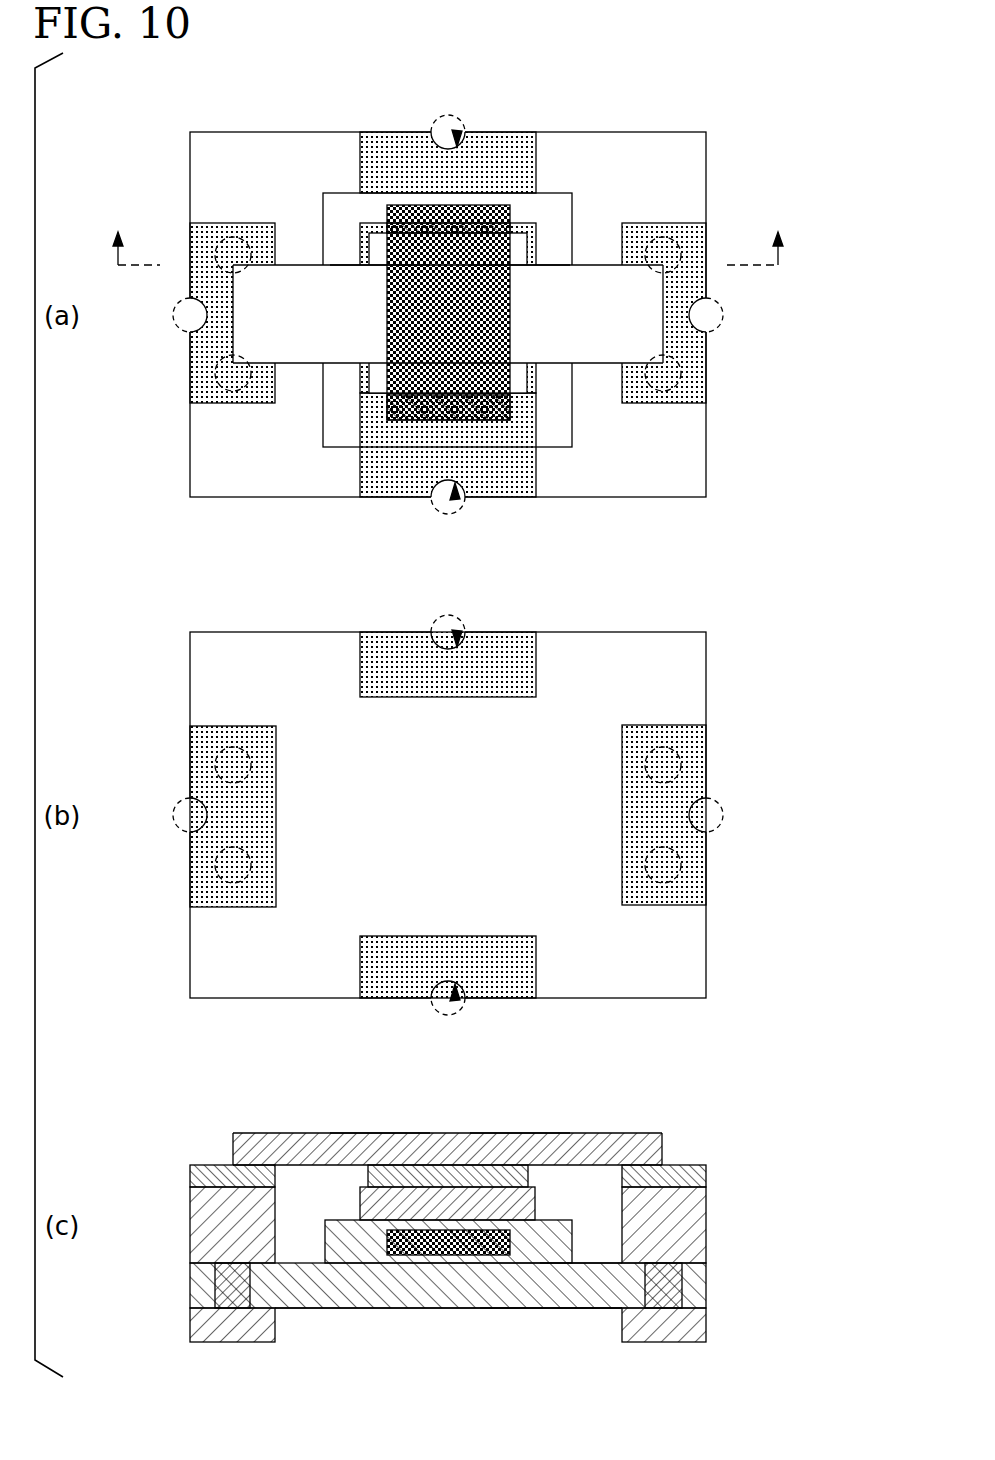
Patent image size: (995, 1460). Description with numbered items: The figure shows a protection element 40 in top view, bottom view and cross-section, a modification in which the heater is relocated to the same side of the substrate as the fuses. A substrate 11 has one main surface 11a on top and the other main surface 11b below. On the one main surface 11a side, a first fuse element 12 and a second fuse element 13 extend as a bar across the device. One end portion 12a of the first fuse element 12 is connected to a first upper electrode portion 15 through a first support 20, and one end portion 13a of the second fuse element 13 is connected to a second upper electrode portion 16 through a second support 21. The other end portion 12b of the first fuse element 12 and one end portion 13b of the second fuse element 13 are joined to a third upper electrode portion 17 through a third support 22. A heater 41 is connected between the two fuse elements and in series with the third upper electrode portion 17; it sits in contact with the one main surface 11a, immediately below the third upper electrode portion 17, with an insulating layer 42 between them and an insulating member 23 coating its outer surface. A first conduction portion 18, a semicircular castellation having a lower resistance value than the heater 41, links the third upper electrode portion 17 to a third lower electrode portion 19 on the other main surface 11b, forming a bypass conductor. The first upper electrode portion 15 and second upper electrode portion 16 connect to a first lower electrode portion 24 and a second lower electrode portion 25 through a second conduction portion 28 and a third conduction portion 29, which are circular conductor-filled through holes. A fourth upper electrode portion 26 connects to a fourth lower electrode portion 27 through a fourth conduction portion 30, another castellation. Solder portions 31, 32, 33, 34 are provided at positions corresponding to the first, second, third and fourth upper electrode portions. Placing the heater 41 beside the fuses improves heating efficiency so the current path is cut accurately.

The substrate 11 is at (668, 155).
The one main surface 11a is at (590, 1262).
The other main surface 11b is at (540, 1308).
The first fuse element 12 is at (290, 300).
The one end portion of first fuse element 12a is at (248, 318).
The other end portion of first fuse element 12b is at (375, 306).
The second fuse element 13 is at (608, 300).
The one end portion of second fuse element 13a is at (650, 318).
The one end portion of second fuse element 13b is at (522, 307).
The first upper electrode portion 15 is at (212, 1228).
The second upper electrode portion 16 is at (683, 1233).
The third upper electrode portion 17 is at (515, 482).
The first conduction portion 18 is at (458, 495).
The third lower electrode portion 19 is at (400, 660).
The first support 20 is at (233, 235).
The second support 21 is at (663, 240).
The third support 22 is at (382, 385).
The insulating member 23 is at (348, 1305).
The first lower electrode portion 24 is at (248, 825).
The second lower electrode portion 25 is at (680, 790).
The fourth upper electrode portion 26 is at (415, 160).
The fourth lower electrode portion 27 is at (390, 980).
The second conduction portion 28 is at (235, 255).
The third conduction portion 29 is at (663, 255).
The fourth conduction portion 30 is at (458, 138).
The solder portion 31 is at (178, 310).
The solder portion 32 is at (718, 314).
The solder portion 33 is at (440, 508).
The solder portion 34 is at (442, 118).
The protection element 40 is at (733, 97).
The heater 41 is at (513, 322).
The insulating layer 42 is at (340, 452).